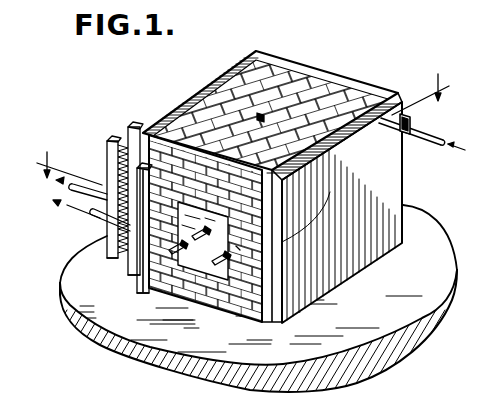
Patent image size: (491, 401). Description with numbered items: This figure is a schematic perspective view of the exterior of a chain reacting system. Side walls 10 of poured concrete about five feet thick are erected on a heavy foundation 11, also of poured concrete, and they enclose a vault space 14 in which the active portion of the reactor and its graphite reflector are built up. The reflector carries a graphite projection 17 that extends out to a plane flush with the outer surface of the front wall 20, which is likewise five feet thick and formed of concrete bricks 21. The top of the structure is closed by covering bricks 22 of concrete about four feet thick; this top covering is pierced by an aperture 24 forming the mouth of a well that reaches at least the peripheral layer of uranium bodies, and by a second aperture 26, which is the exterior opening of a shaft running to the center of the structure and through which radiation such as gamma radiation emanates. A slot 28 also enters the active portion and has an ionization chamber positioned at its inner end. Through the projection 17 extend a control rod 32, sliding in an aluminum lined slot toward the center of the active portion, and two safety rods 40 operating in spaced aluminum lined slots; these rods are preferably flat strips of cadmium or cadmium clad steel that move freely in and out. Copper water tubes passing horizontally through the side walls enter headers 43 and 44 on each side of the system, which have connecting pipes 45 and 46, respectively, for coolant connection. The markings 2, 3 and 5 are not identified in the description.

The section line 2- 2 is at (249, 139).
The shaft 3 is at (407, 123).
The handle end of shaft 5 is at (443, 145).
The side walls 10 is at (370, 93).
The foundation 11 is at (78, 340).
The vault space 14 is at (300, 83).
The graphite projection 17 is at (192, 222).
The front wall 20 is at (134, 126).
The concrete bricks 21 is at (150, 150).
The covering bricks 22 is at (250, 75).
The aperture 24 is at (263, 116).
The second aperture 26 is at (217, 97).
The slot 28 is at (238, 248).
The control rod 32 is at (200, 240).
The safety rods 40 is at (182, 252).
The header 43 is at (110, 150).
The header 44 is at (133, 285).
The connecting pipe 45 is at (80, 189).
The connecting pipe 46 is at (95, 222).